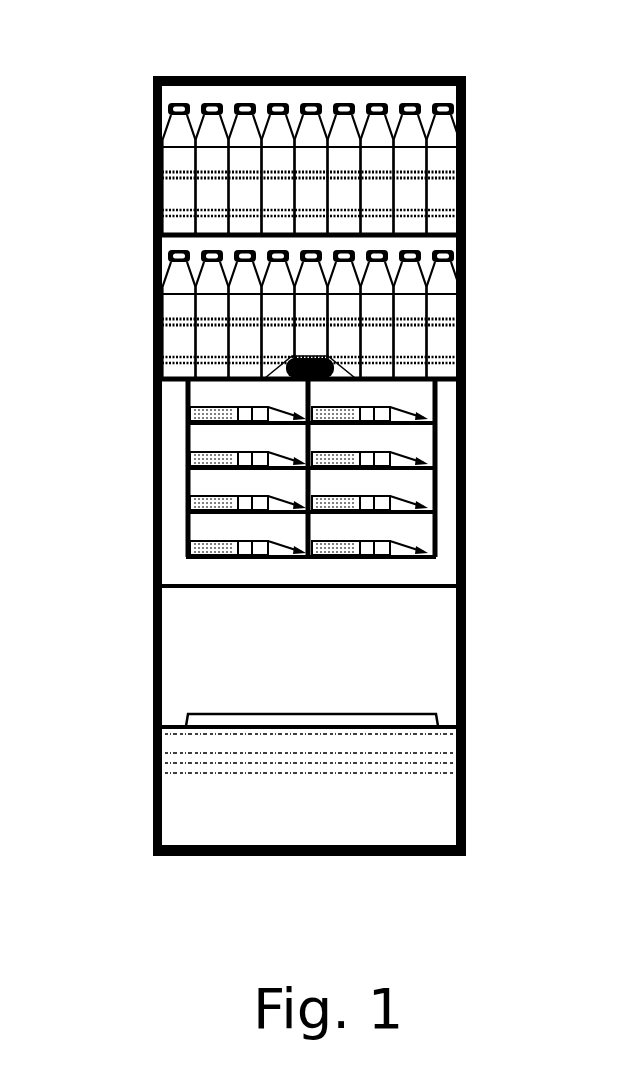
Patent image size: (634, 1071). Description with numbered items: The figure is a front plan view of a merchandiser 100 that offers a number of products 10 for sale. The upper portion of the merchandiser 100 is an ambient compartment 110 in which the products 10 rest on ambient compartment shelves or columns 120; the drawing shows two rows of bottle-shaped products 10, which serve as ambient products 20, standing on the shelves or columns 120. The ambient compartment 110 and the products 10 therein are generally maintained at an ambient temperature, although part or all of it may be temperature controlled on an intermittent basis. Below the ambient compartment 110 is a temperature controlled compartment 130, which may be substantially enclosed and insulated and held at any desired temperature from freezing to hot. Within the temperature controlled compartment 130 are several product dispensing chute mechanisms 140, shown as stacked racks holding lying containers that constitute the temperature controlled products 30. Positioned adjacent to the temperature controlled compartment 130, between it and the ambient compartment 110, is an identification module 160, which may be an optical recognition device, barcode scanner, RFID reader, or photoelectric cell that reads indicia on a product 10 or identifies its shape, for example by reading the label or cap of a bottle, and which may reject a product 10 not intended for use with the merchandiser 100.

The merchandiser 100 is at (294, 436).
The ambient compartment 110 is at (316, 286).
The ambient compartment shelves or columns 120 is at (162, 237).
The temperature controlled compartment 130 is at (151, 470).
The product dispensing chute mechanisms 140 is at (192, 540).
The identification module 160 is at (335, 372).
The products 10 is at (316, 286).
The ambient products 20 is at (345, 108).
The temperature controlled products 30 is at (316, 482).